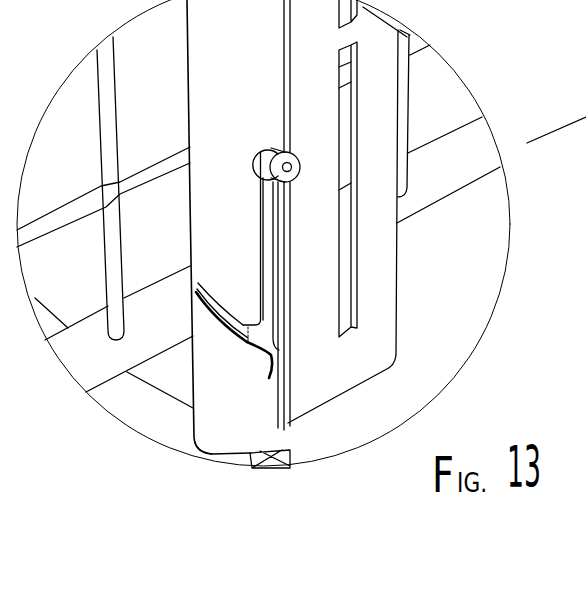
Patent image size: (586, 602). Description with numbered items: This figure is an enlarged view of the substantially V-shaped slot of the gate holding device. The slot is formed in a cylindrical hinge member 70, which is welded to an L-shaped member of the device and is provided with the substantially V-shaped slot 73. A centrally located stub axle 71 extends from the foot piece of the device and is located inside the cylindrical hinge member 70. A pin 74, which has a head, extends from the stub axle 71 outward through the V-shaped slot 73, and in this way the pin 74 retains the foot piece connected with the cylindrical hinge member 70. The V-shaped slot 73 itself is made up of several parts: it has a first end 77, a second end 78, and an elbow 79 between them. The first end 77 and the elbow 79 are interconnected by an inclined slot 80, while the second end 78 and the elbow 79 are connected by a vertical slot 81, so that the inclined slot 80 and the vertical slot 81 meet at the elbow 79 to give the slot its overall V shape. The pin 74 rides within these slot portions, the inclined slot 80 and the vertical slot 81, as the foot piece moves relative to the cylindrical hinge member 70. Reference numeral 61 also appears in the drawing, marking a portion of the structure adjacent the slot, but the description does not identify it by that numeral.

The slot 61 is at (348, 148).
The cylindrical hinge member 70 is at (290, 427).
The stub axle 71 is at (212, 458).
The substantially V-shaped slot 73 is at (243, 273).
The pin 74 is at (291, 166).
The first end 77 is at (197, 290).
The second end 78 is at (264, 151).
The elbow 79 is at (269, 378).
The inclined slot 80 is at (203, 333).
The vertical slot 81 is at (268, 262).